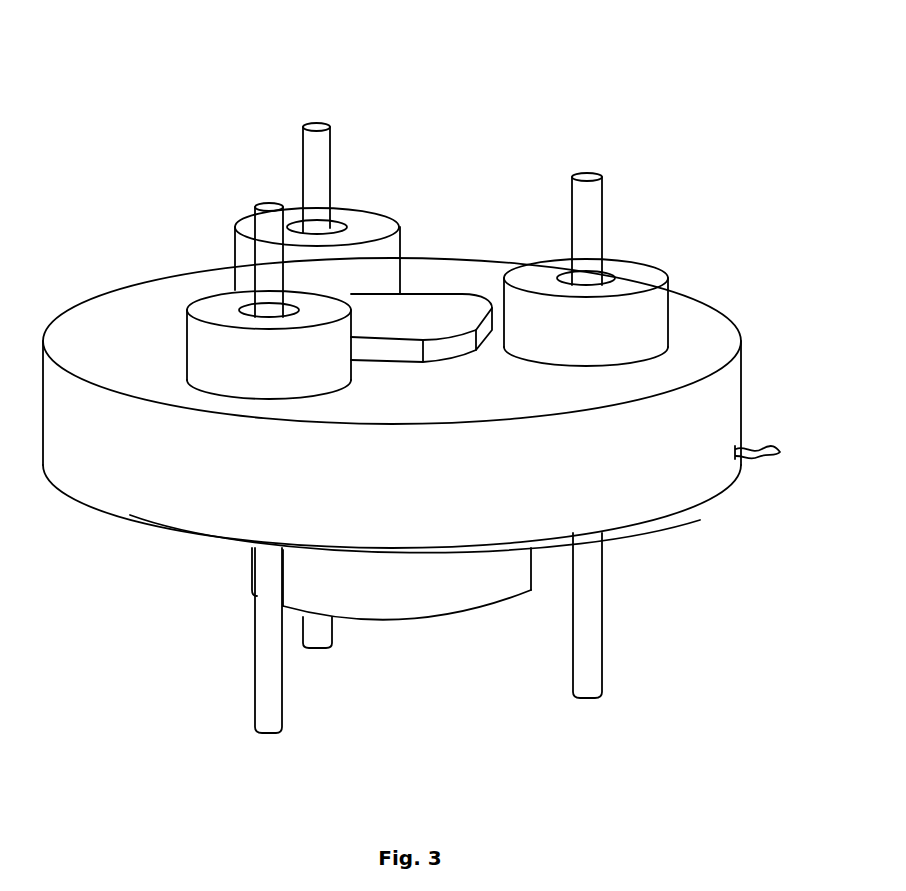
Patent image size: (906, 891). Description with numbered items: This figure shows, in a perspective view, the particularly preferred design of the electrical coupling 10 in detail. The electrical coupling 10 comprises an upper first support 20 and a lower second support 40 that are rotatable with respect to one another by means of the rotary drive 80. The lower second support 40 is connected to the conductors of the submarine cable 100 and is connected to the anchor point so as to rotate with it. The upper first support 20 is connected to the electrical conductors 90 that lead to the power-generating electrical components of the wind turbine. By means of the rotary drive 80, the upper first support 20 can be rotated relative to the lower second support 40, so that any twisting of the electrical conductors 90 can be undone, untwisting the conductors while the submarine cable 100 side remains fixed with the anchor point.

The electrical coupling 10 is at (183, 118).
The upper first support 20 is at (117, 460).
The lower second support 40 is at (218, 538).
The rotary drive 80 is at (386, 600).
The electrical conductors 90 is at (272, 268).
The submarine cable 100 is at (272, 713).